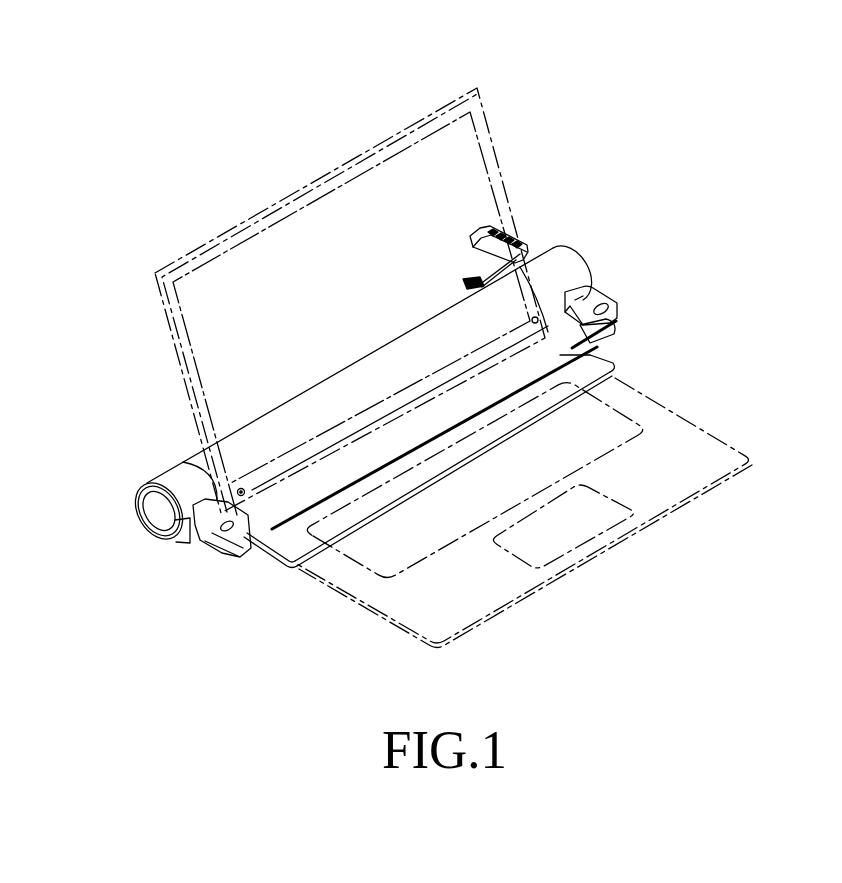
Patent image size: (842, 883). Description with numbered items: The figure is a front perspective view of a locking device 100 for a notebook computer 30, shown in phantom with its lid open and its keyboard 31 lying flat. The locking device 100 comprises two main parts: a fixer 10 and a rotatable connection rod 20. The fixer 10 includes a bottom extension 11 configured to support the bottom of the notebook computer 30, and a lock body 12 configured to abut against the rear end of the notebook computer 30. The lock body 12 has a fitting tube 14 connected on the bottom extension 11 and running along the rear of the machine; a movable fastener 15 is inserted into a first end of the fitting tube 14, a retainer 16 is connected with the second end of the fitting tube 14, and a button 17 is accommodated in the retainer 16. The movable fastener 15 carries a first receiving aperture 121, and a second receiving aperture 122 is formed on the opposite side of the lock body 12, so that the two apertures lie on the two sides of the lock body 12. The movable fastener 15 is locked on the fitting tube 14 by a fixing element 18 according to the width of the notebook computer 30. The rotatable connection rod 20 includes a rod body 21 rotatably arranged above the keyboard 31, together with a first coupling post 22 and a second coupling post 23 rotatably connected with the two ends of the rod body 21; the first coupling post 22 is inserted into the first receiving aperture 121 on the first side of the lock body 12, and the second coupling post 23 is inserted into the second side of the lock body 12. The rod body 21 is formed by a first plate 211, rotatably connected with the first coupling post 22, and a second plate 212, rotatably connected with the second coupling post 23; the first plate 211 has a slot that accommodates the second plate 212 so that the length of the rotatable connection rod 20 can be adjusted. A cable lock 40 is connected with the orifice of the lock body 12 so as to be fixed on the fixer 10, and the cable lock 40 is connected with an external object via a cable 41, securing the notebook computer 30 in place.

The locking device 100 is at (139, 137).
The notebook computer 30 is at (214, 236).
The keyboard 31 is at (683, 478).
The fitting tube 14 is at (190, 462).
The movable fastener 15 is at (152, 508).
The retainer 16 is at (549, 257).
The button 17 is at (591, 268).
The fixing element 18 is at (534, 316).
The cable lock 40 is at (487, 228).
The cable 41 is at (466, 280).
The lock body 12 is at (148, 563).
The first receiving aperture 121 is at (205, 523).
The first coupling post 22 is at (200, 528).
The bottom extension 11 is at (270, 560).
The fixer 10 is at (245, 624).
The rotatable connection rod 20 is at (297, 537).
The rod body 21 is at (667, 355).
The first plate 211 is at (562, 355).
The second plate 212 is at (596, 335).
The second receiving aperture 122 is at (588, 290).
The second coupling post 23 is at (613, 316).